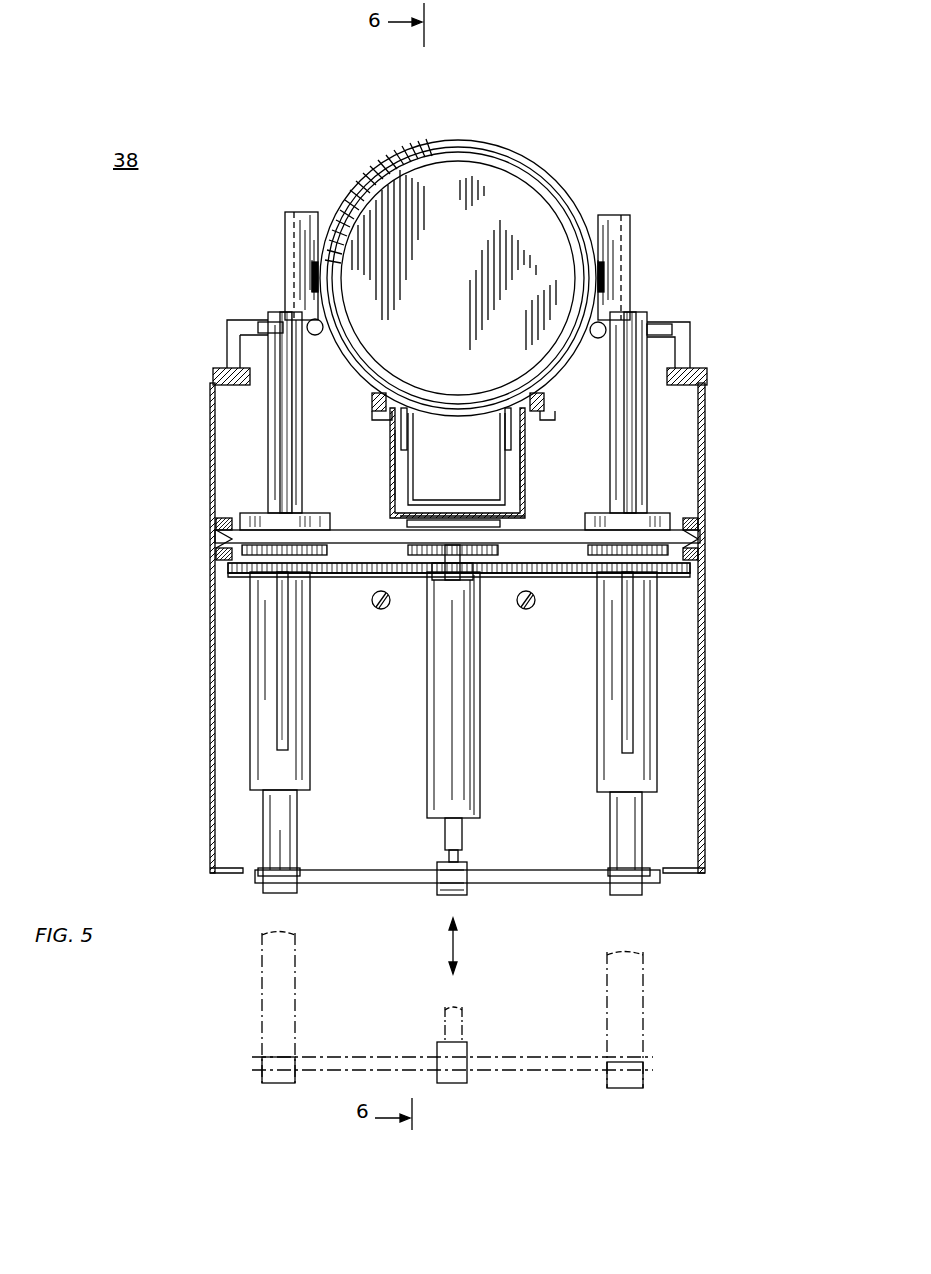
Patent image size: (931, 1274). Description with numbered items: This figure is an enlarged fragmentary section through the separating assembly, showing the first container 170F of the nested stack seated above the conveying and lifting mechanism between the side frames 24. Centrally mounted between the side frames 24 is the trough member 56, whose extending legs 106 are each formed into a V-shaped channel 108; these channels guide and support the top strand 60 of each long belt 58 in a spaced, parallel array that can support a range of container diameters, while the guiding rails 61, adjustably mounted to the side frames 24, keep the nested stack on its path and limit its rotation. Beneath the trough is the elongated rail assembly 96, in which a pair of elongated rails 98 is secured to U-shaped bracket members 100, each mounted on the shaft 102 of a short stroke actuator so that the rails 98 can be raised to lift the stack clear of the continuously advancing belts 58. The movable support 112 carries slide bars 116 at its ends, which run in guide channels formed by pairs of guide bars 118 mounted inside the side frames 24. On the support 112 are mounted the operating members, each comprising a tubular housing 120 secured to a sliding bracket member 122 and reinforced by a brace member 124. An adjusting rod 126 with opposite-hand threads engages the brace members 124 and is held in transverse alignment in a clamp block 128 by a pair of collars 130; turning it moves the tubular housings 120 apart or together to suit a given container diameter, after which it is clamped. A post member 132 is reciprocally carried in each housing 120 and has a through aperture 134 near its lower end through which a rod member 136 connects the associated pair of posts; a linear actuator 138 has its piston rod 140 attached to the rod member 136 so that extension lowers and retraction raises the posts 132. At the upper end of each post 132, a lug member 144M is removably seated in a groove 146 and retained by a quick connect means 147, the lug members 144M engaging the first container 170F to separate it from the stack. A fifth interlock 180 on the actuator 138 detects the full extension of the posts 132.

The side frame 24 is at (210, 638).
The trough member 56 is at (525, 519).
The long belt 58 is at (380, 610).
The top strand 60 is at (372, 395).
The guiding rail 61 is at (318, 334).
The elongated rail assembly 96 is at (534, 463).
The elongated rail 98 is at (500, 425).
The U-shaped bracket member 100 is at (468, 500).
The shaft 102 is at (500, 523).
The extending leg 106 is at (392, 476).
The V-shaped channel 108 is at (380, 412).
The movable support 112 is at (372, 530).
The slide bar 116 is at (216, 540).
The guide bar 118 is at (216, 522).
The tubular housing 120 is at (255, 680).
The sliding bracket member 122 is at (250, 513).
The brace member 124 is at (278, 690).
The adjusting rod 126 is at (352, 577).
The clamp block 128 is at (460, 580).
The collar 130 is at (435, 582).
The post member 132 is at (232, 406).
The through aperture 134 is at (300, 868).
The rod member 136 is at (580, 882).
The linear actuator 138 is at (480, 755).
The piston rod 140 is at (462, 838).
The lug member 144M is at (320, 212).
The groove 146 is at (270, 322).
The quick connect means 147 is at (227, 320).
The first container 170F is at (545, 170).
The fifth interlock 180 is at (408, 550).